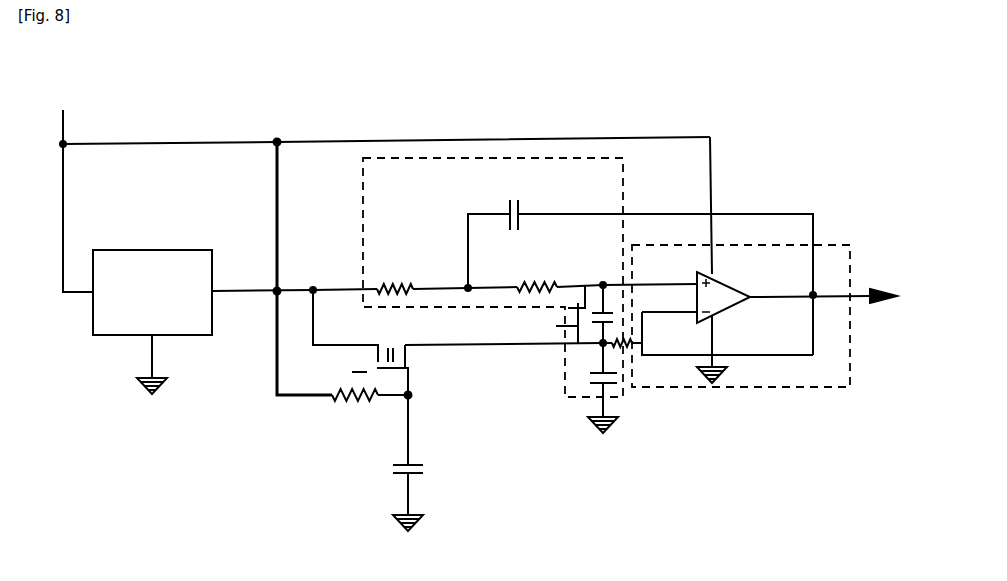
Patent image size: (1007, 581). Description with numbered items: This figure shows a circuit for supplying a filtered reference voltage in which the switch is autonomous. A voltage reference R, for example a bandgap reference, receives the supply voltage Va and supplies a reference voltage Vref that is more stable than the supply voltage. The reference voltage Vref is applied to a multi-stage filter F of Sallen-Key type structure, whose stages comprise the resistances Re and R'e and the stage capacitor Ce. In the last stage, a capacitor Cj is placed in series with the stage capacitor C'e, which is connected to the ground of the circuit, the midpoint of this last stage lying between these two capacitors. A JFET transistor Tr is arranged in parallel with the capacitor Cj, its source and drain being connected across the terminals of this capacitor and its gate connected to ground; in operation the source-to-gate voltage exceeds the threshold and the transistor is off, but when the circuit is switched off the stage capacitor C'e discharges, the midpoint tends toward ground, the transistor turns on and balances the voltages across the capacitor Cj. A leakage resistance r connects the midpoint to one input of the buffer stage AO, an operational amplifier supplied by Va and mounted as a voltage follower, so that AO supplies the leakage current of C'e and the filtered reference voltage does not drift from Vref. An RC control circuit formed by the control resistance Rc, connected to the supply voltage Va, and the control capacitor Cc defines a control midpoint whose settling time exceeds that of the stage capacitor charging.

The supply voltage Va is at (377, 186).
The reference voltage Vref is at (265, 285).
The voltage reference R is at (152, 322).
The resistance of the filter stage Re is at (443, 275).
The resistance of the last stage R'e is at (596, 274).
The stage capacitor Ce is at (640, 263).
The filter F is at (586, 158).
The junction capacitor Cj is at (612, 300).
The transistor Tr is at (553, 338).
The stage capacitor of the last stage C'e is at (577, 417).
The control resistance Rc is at (372, 417).
The control capacitor Cc is at (426, 463).
The leakage resistance r is at (630, 352).
The buffer stage AO is at (840, 388).